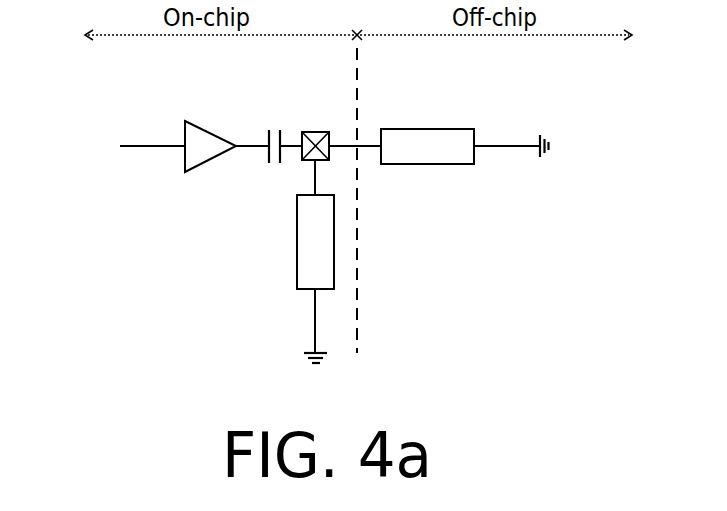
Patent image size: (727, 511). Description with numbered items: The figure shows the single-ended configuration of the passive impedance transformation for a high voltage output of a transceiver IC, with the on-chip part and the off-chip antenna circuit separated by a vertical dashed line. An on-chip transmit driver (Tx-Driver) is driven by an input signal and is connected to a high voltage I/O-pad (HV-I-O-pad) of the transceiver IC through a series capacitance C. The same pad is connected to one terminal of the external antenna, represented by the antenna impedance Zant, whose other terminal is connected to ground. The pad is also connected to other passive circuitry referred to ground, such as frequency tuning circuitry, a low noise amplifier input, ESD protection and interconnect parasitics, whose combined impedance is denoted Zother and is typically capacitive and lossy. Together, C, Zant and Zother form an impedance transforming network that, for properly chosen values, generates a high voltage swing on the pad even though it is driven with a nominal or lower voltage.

The transmit driver Tx-Driver is at (197, 147).
The series capacitance C is at (285, 128).
The high voltage I/O-pad HV-I-O-pad is at (317, 131).
The antenna impedance Zant is at (465, 146).
The combined impedance of other passive circuitry Zother is at (316, 225).